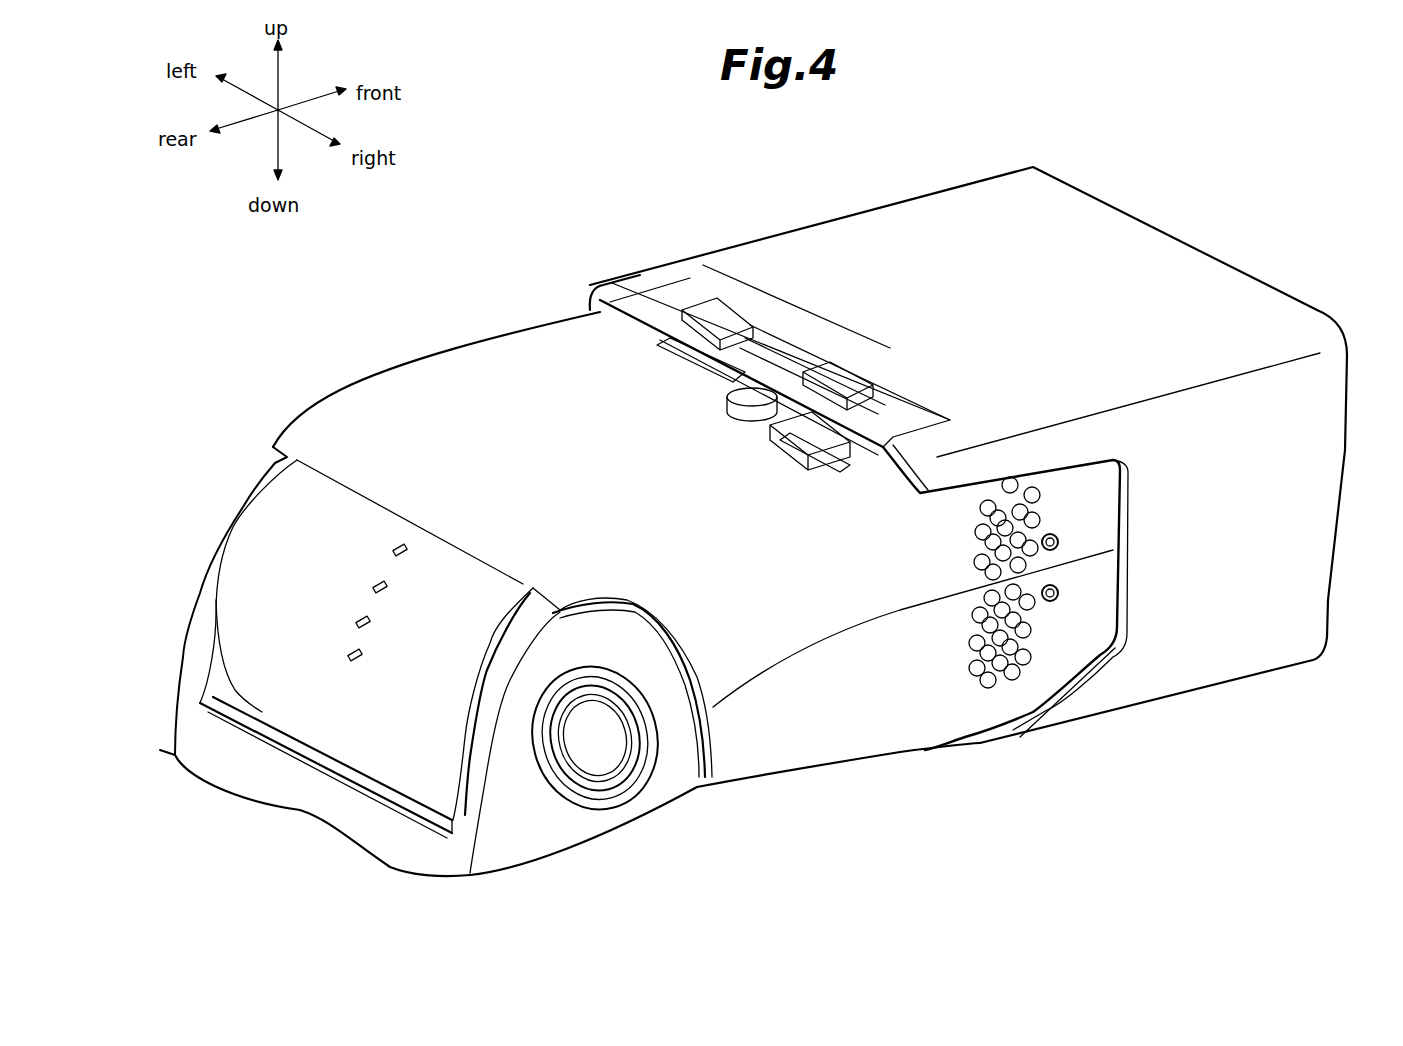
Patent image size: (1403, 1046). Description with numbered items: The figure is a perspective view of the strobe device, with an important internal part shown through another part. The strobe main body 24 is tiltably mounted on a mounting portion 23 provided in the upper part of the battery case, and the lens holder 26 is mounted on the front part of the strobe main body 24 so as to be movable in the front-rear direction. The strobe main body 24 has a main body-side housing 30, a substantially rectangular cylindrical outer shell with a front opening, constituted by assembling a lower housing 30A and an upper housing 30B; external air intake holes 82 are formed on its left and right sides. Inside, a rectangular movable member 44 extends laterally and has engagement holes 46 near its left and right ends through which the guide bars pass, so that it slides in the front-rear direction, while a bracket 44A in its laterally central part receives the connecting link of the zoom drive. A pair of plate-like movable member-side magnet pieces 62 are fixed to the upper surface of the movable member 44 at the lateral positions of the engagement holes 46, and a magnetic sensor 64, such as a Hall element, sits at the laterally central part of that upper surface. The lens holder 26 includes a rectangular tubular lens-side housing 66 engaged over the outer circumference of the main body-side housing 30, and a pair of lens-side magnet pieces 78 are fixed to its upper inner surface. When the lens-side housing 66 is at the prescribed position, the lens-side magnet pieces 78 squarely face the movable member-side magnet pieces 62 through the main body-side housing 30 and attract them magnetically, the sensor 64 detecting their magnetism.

The mounting portion 23 is at (507, 807).
The strobe main body 24 is at (517, 333).
The lens holder 26 is at (1077, 233).
The main body-side housing 30 is at (372, 383).
The lower housing 30A is at (900, 727).
The upper housing 30B is at (737, 670).
The movable member 44 is at (803, 437).
The bracket 44A is at (725, 412).
The engagement holes 46 is at (677, 367).
The movable member-side magnet pieces 62 is at (760, 342).
The magnetic sensor 64 is at (780, 352).
The lens-side housing 66 is at (952, 210).
The lens-side magnet pieces 78 is at (700, 308).
The external air intake holes 82 is at (1045, 552).